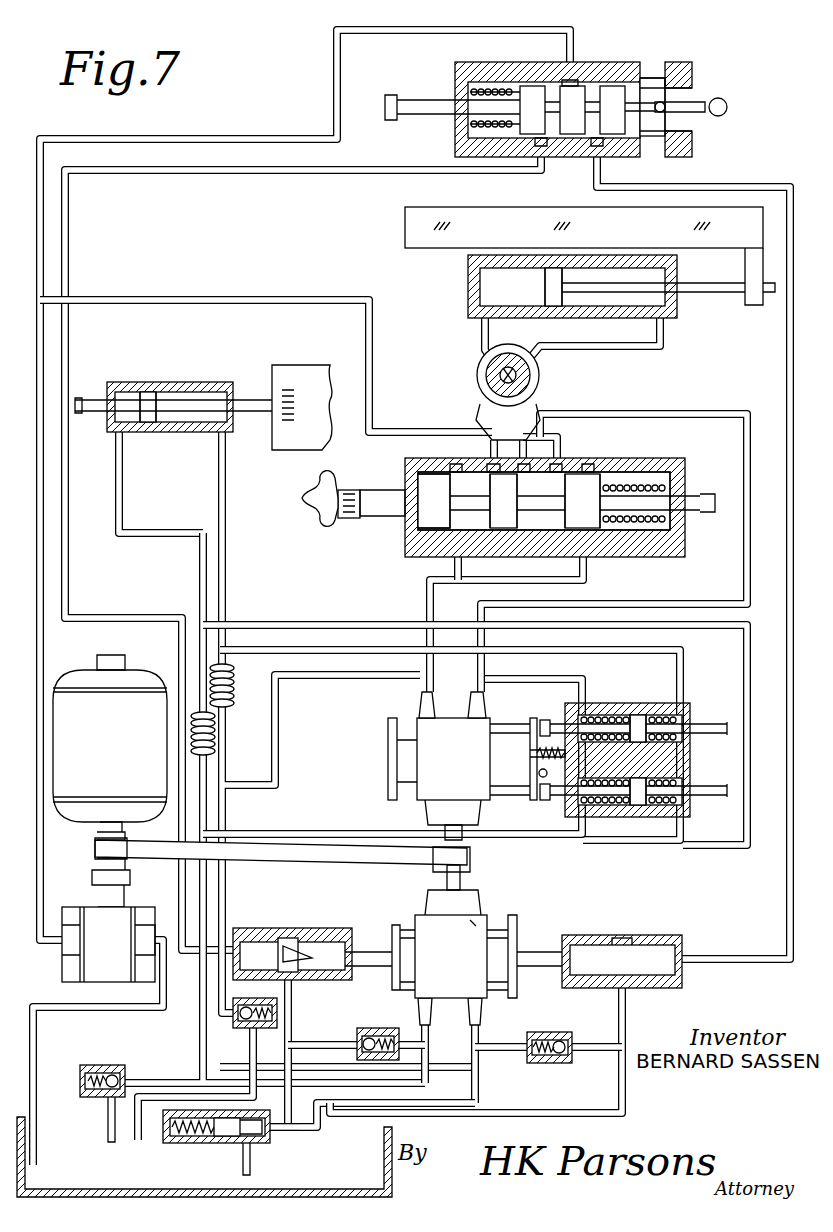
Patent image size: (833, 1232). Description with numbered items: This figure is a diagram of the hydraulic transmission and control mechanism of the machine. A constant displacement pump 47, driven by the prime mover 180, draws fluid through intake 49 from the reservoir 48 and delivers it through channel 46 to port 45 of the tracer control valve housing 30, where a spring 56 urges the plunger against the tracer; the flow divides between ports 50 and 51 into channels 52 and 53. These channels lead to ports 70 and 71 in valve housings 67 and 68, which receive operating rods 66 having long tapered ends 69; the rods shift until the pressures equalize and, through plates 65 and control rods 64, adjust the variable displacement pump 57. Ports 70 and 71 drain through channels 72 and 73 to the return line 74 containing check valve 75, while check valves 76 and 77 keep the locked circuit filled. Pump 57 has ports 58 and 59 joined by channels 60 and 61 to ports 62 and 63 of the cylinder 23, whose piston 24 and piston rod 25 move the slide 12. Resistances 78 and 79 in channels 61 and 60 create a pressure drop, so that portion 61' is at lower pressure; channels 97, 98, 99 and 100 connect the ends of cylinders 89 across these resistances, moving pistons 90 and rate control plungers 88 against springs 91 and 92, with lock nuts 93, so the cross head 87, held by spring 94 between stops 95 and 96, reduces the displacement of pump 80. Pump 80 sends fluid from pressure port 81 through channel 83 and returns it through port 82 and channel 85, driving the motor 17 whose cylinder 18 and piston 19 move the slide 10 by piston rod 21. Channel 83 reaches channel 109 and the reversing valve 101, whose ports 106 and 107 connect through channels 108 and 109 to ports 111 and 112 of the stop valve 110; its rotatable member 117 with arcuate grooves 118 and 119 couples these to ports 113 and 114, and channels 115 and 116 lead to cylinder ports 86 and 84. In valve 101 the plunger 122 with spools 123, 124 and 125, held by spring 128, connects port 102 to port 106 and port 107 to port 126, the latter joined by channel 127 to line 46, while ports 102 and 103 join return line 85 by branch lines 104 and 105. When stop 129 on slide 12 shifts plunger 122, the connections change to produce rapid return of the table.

The slide 10 is at (633, 230).
The slide 12 is at (320, 490).
The motor 17 is at (560, 318).
The cylinder 18 is at (466, 268).
The piston 19 is at (605, 296).
The piston rod 21 is at (725, 296).
The cylinder 23 is at (120, 386).
The piston 24 is at (150, 392).
The piston rod 25 is at (240, 400).
The housing 30 is at (640, 58).
The port 45 is at (578, 68).
The channel 46 is at (362, 40).
The constant displacement pump 47 is at (98, 982).
The reservoir 48 is at (400, 1130).
The intake 49 is at (98, 1012).
The port 50 is at (535, 152).
The port 51 is at (590, 162).
The channel 52 is at (373, 180).
The channel 53 is at (735, 186).
The spring 56 is at (508, 68).
The variable displacement pump 57 is at (465, 920).
The port 58 is at (430, 1035).
The port 59 is at (480, 1030).
The channel 60 is at (215, 1050).
The channel 61 is at (275, 808).
The portion of channel 61 61' is at (168, 522).
The port 62 is at (219, 440).
The port 63 is at (122, 448).
The control rods 64 is at (497, 720).
The plates 65 is at (510, 968).
The operating rods 66 is at (348, 945).
The valve housing 67 is at (308, 938).
The valve housing 68 is at (672, 940).
The tapered ends 69 is at (285, 936).
The port 70 is at (292, 990).
The port 71 is at (627, 990).
The channel 72 is at (290, 1055).
The channel 73 is at (618, 1082).
The return line 74 is at (288, 1140).
The check valve 75 is at (195, 1140).
The check valve 76 is at (385, 1022).
The check valve 77 is at (560, 1032).
The resistance 78 is at (216, 742).
The resistance 79 is at (236, 686).
The variable displacement pump 80 is at (425, 714).
The port 81 is at (470, 690).
The port 82 is at (418, 698).
The channel 83 is at (748, 548).
The port 84 is at (678, 324).
The channel 85 is at (428, 600).
The port 86 is at (480, 330).
The cross head 87 is at (530, 764).
The rate control plungers 88 is at (533, 705).
The cylinders 89 is at (648, 705).
The pistons 90 is at (628, 710).
The springs 91 is at (600, 712).
The springs 92 is at (700, 718).
The lock nuts 93 is at (546, 712).
The spring 94 is at (540, 748).
The positive stop 95 is at (538, 775).
The positive stop 96 is at (392, 764).
The channel 97 is at (550, 838).
The channel 98 is at (748, 670).
The channel 99 is at (512, 679).
The channel 100 is at (590, 650).
The reversing valve 101 is at (660, 470).
The port 102 is at (460, 557).
The port 103 is at (588, 557).
The branch line 104 is at (455, 565).
The branch line 105 is at (588, 580).
The port 106 is at (480, 468).
The port 107 is at (560, 444).
The channel 108 is at (488, 448).
The channel 109 is at (525, 428).
The stop valve 110 is at (510, 338).
The port 111 is at (486, 402).
The port 112 is at (532, 398).
The port 113 is at (486, 355).
The port 114 is at (536, 356).
The channel 115 is at (478, 346).
The channel 116 is at (640, 350).
The rotatable member 117 is at (488, 414).
The arcuate groove 118 is at (480, 376).
The arcuate groove 119 is at (535, 375).
The plunger 122 is at (358, 522).
The spool 123 is at (430, 520).
The spool 124 is at (505, 528).
The spool 125 is at (590, 502).
The port 126 is at (600, 456).
The channel 127 is at (230, 314).
The spring 128 is at (655, 522).
The adjustable stop 129 is at (350, 486).
The prime mover 180 is at (78, 684).